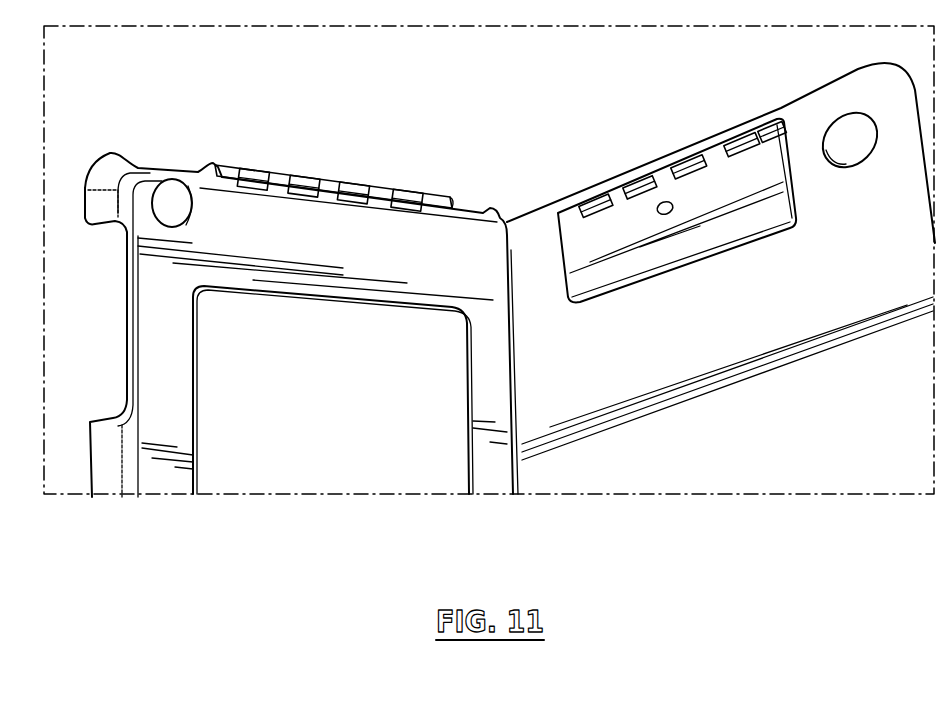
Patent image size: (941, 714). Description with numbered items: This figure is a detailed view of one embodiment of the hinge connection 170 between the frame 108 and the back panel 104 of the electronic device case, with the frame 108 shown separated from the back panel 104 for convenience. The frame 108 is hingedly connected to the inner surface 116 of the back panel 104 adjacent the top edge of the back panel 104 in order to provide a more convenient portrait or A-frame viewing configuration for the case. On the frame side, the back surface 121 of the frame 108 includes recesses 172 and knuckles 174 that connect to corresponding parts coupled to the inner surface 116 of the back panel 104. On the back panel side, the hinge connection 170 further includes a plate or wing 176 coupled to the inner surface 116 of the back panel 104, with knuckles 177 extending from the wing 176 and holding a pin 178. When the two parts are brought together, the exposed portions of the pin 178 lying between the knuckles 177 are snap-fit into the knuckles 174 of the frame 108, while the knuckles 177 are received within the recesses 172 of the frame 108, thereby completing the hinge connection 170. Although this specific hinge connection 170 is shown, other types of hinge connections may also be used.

The back panel 104 is at (657, 443).
The frame 108 is at (167, 475).
The inner surface 116 is at (713, 437).
The back surface 121 is at (182, 438).
The hinge connection 170 is at (499, 214).
The recesses 172 is at (232, 181).
The knuckles 174 is at (281, 257).
The plate or wing 176 is at (685, 224).
The knuckles 177 is at (713, 152).
The pin 178 is at (640, 188).